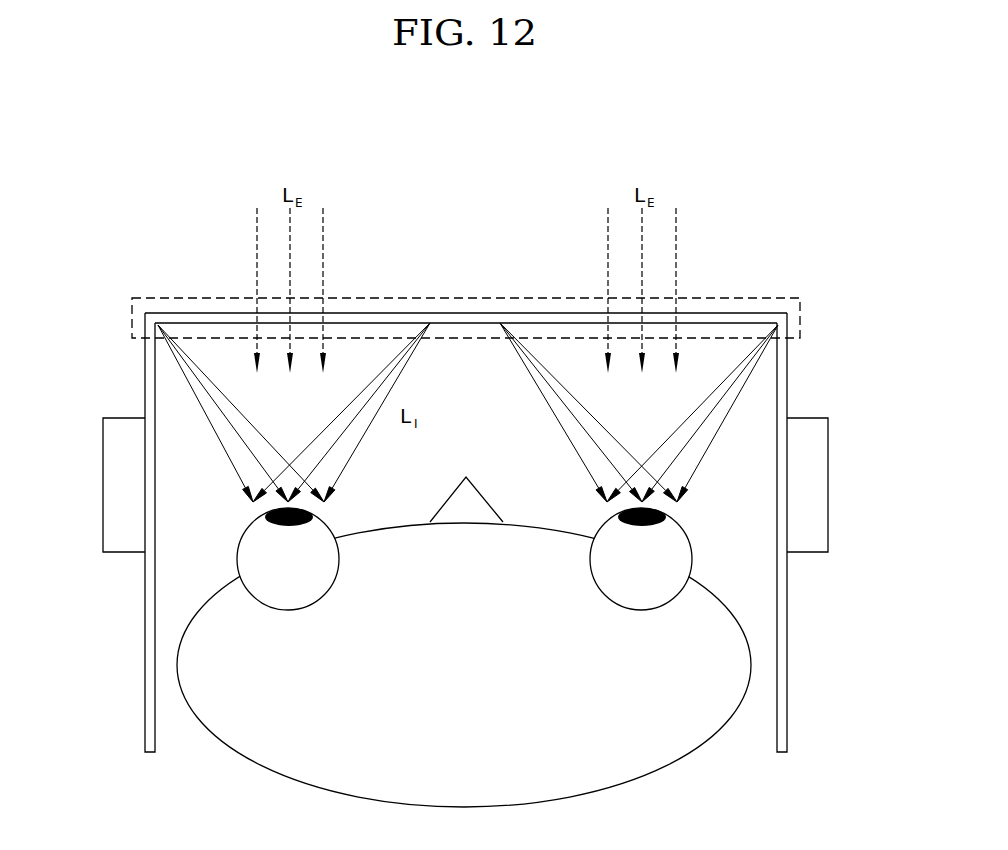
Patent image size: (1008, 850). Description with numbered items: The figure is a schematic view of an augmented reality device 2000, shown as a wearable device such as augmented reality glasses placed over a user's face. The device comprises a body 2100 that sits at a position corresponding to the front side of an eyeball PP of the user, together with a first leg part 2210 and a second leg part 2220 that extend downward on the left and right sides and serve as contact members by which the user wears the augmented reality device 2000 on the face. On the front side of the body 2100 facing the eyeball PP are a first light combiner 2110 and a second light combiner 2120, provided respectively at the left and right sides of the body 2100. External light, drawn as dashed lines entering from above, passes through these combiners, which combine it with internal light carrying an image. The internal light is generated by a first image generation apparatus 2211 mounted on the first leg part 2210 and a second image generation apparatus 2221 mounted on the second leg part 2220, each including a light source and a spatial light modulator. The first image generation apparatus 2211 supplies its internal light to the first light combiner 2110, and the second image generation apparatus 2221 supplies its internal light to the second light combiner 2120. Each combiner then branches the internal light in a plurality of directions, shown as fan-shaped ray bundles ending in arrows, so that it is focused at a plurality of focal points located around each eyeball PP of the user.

The augmented reality device 2000 is at (764, 218).
The body 2100 is at (165, 298).
The first light combiner 2110 is at (385, 298).
The second light combiner 2120 is at (549, 298).
The first leg part 2210 is at (145, 722).
The second leg part 2220 is at (788, 718).
The first image generation apparatus 2211 is at (103, 464).
The second image generation apparatus 2221 is at (828, 481).
The eyeball PP is at (680, 542).